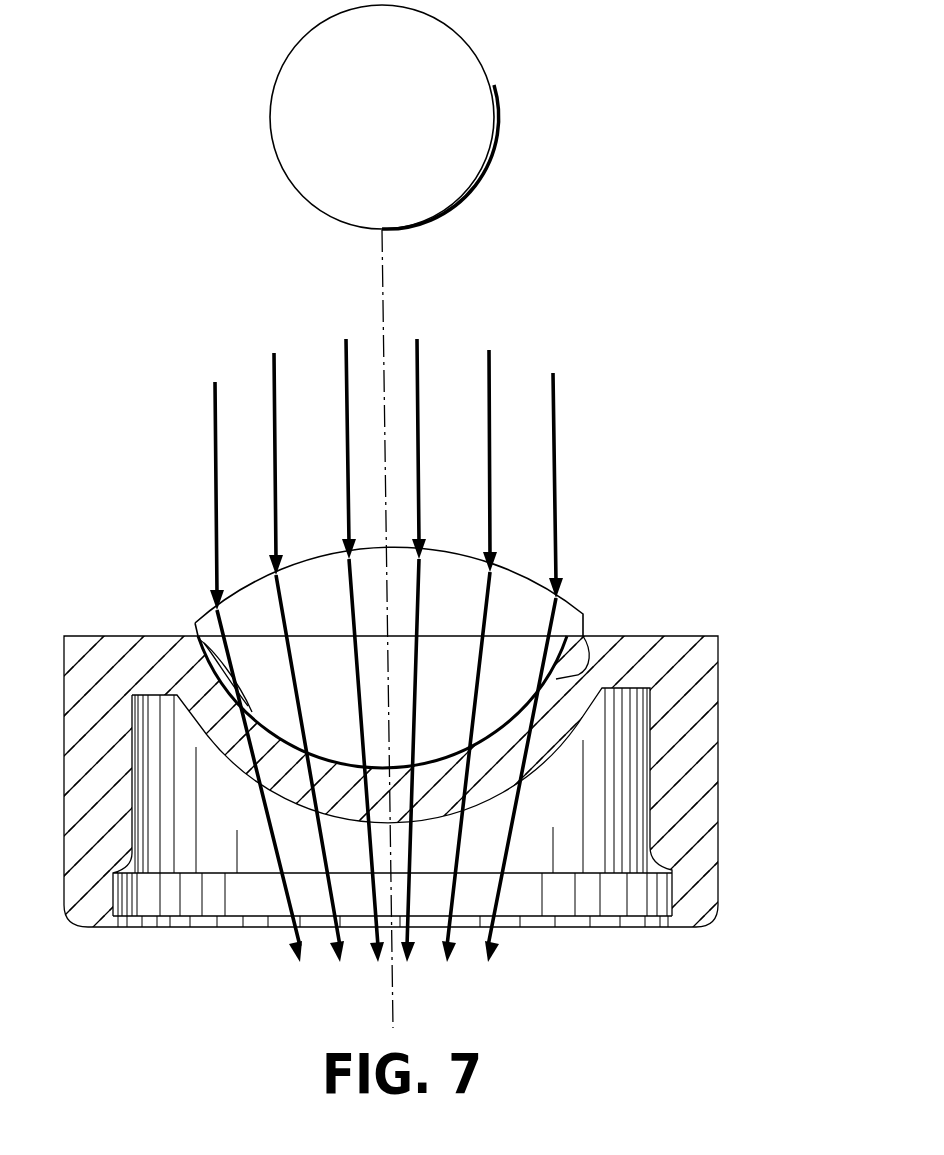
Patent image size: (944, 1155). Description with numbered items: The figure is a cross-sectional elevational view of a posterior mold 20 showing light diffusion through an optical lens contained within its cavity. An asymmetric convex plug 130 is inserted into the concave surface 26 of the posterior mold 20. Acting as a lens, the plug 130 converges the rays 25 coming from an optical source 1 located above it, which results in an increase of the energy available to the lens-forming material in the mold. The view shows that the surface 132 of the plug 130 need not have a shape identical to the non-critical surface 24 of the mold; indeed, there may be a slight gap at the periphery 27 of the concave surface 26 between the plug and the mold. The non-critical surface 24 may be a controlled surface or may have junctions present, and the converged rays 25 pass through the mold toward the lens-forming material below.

The optical source 1 is at (500, 70).
The rays 25 is at (500, 360).
The posterior mold 20 is at (730, 684).
The non-critical surface 24 is at (250, 777).
The asymmetric convex plug 130 is at (520, 598).
The surface of plug 132 is at (217, 658).
The periphery of concave surface 27 is at (215, 660).
The concave surface 26 is at (555, 678).